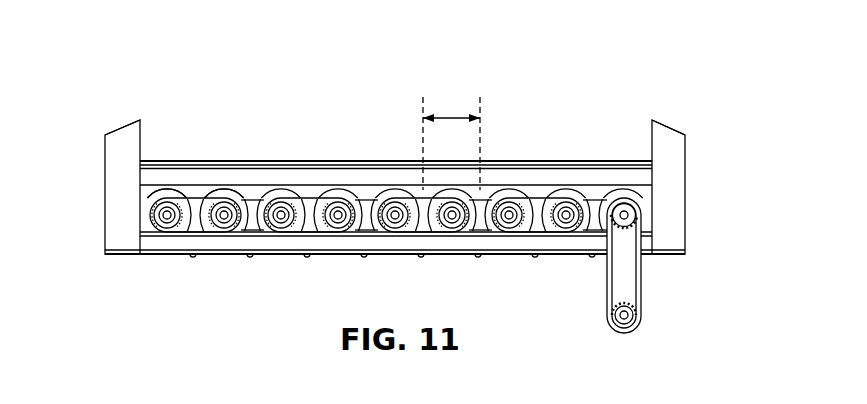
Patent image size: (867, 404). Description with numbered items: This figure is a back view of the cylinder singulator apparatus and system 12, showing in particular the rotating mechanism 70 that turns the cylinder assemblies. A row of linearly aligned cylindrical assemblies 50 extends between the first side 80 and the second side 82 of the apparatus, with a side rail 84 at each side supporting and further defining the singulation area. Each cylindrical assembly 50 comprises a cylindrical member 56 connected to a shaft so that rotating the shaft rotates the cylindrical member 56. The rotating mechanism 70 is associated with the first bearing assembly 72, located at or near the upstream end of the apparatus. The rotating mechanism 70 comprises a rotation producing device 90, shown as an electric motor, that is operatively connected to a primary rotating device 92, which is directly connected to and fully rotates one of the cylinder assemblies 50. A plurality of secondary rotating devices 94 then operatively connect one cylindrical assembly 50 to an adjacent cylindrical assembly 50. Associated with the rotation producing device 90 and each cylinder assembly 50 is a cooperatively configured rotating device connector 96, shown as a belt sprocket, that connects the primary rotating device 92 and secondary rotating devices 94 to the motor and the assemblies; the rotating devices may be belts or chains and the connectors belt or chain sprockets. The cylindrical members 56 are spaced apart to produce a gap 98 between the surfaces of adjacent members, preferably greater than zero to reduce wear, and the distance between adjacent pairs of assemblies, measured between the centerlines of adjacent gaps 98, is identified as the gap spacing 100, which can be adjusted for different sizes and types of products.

The singulator system 12 is at (395, 147).
The cylindrical assembly 50 is at (394, 149).
The cylindrical member 56 is at (390, 191).
The rotating mechanism 70 is at (674, 297).
The first bearing assembly 72 is at (512, 220).
The first side 80 is at (106, 112).
The second side 82 is at (683, 102).
The side rail 84 is at (123, 168).
The rotation producing device 90 is at (632, 316).
The primary rotating device 92 is at (637, 275).
The secondary rotating device 94 is at (304, 232).
The rotating device connector 96 is at (210, 222).
The gap 98 is at (195, 183).
The gap spacing 100 is at (447, 97).